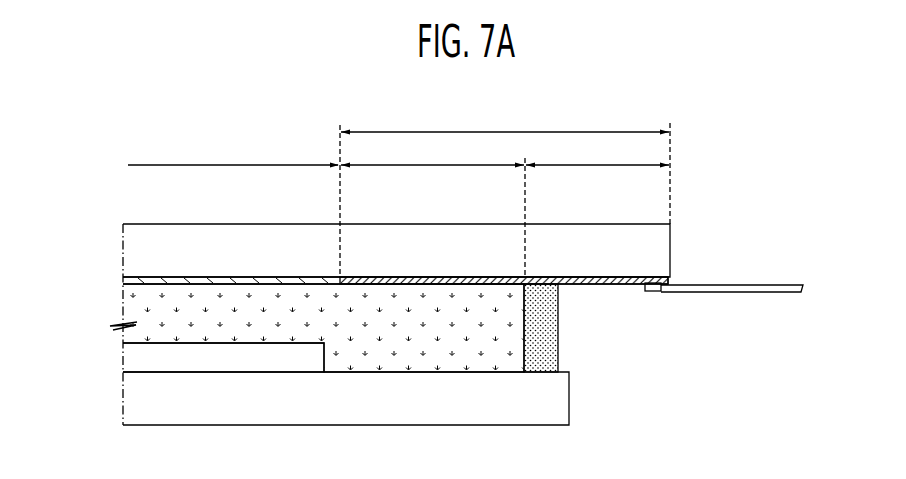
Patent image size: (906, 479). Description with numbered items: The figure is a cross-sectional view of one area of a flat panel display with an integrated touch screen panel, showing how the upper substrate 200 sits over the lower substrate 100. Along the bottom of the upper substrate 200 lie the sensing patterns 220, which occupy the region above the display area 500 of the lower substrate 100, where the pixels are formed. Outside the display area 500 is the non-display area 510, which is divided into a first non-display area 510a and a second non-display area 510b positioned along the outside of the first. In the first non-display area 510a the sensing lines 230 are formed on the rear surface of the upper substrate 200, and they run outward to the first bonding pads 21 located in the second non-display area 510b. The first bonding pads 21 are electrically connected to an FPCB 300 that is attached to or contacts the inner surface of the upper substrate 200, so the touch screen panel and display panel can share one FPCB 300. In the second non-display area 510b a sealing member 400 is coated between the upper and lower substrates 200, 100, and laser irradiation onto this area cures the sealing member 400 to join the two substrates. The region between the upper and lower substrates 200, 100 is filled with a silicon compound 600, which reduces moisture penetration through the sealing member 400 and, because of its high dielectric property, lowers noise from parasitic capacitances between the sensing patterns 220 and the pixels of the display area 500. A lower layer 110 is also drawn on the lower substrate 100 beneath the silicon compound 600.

The lower substrate 100 is at (563, 400).
The lower layer 110 is at (125, 362).
The upper substrate 200 is at (660, 253).
The sensing patterns 220 is at (123, 282).
The sensing lines 230 is at (425, 280).
The first bonding pads 21 is at (661, 292).
The FPCB 300 is at (772, 292).
The sealing member 400 is at (553, 330).
The display area 500 is at (233, 154).
The non-display area 510 is at (505, 120).
The first non-display area 510a is at (432, 155).
The second non-display area 510b is at (597, 155).
The silicon compound 600 is at (128, 307).